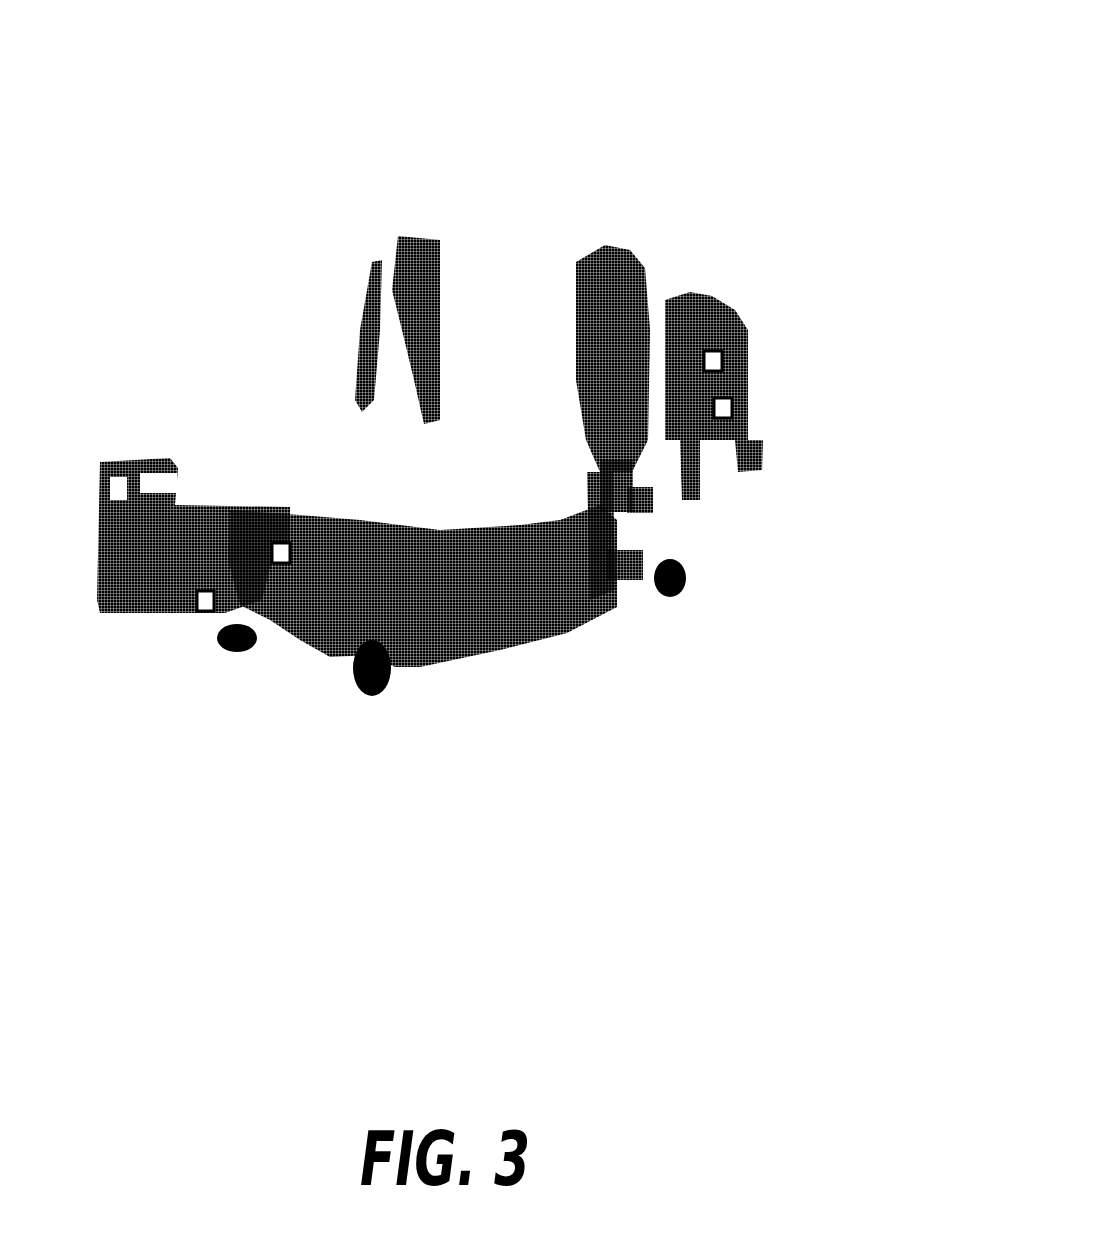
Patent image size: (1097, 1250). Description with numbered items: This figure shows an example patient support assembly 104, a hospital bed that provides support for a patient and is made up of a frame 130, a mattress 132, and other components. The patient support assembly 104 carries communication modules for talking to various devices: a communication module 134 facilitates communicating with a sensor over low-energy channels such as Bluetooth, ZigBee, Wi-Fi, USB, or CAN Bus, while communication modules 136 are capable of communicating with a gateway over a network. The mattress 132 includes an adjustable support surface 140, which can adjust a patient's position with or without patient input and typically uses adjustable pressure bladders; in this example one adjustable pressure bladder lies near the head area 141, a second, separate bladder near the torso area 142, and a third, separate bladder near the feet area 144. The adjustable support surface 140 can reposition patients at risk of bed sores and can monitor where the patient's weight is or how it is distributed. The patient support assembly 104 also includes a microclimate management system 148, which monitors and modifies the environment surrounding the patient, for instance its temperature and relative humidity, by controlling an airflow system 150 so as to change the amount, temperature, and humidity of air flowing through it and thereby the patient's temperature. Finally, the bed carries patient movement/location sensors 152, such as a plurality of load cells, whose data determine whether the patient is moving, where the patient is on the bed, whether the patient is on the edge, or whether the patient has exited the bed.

The patient support assembly 104 is at (818, 82).
The frame 130 is at (722, 308).
The mattress 132 is at (573, 260).
The communication module 134 is at (723, 361).
The communication modules 136 is at (733, 411).
The adjustable support surface 140 is at (220, 468).
The head area 141 is at (476, 316).
The torso area 142 is at (433, 413).
The feet area 144 is at (296, 456).
The microclimate management system 148 is at (283, 566).
The airflow system 150 is at (205, 614).
The patient movement/location sensors 152 is at (397, 632).